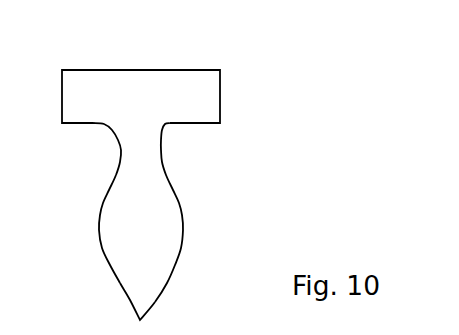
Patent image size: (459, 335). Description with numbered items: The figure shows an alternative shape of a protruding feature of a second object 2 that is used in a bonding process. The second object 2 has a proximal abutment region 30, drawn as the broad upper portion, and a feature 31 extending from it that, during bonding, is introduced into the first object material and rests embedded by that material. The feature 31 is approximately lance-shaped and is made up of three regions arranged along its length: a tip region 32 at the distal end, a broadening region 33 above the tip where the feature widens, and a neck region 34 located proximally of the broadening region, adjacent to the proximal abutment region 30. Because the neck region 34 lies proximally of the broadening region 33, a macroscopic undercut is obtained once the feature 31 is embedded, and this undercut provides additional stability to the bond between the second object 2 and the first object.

The second object 2 is at (209, 57).
The proximal abutment region 30 is at (221, 70).
The feature 31 is at (141, 320).
The tip region 32 is at (138, 304).
The broadening region 33 is at (135, 226).
The neck region 34 is at (121, 158).